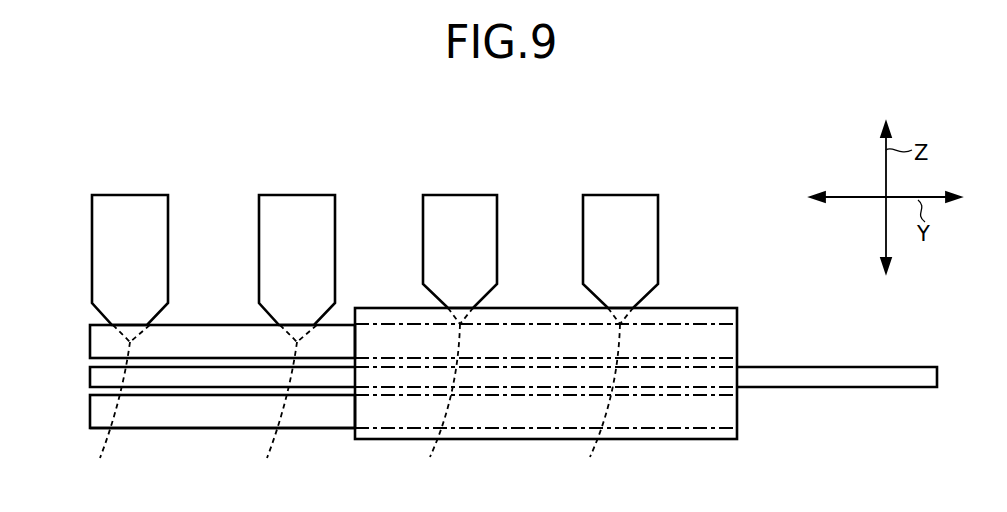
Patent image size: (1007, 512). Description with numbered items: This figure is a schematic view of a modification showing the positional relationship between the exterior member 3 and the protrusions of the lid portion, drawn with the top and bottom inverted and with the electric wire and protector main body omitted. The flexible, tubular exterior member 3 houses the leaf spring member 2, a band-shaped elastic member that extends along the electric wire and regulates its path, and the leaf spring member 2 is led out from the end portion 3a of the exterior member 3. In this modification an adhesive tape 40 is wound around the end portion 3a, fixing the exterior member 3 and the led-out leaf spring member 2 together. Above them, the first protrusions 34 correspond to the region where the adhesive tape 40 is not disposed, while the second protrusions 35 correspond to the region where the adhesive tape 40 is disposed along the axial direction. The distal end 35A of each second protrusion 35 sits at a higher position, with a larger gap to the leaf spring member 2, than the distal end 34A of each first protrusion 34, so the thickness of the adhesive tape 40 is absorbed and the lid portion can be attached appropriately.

The leaf spring member 2 is at (853, 378).
The exterior member 3 is at (102, 342).
The end portion of the exterior member 3a is at (297, 422).
The first protrusion 34 is at (128, 207).
The distal end of the first protrusion 34A is at (202, 408).
The second protrusion 35 is at (460, 207).
The distal end of the second protrusion 35A is at (525, 399).
The adhesive tape 40 is at (708, 307).